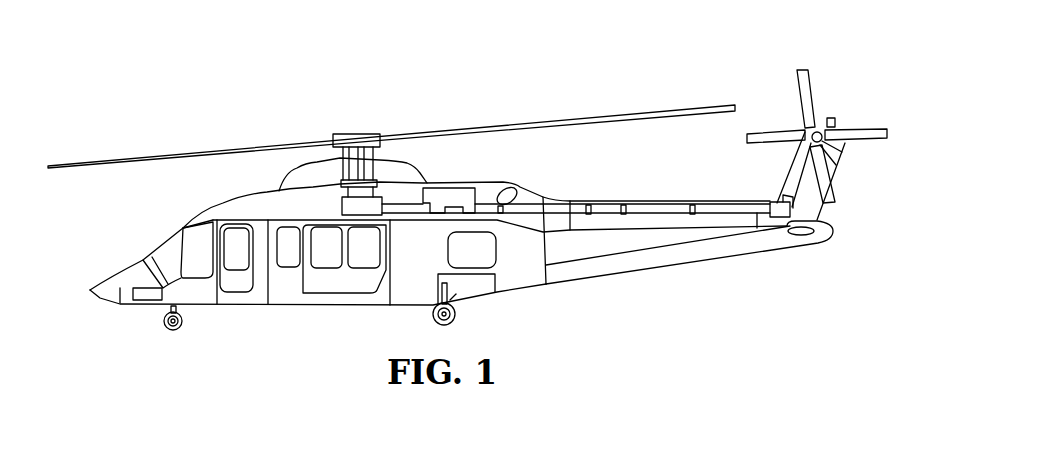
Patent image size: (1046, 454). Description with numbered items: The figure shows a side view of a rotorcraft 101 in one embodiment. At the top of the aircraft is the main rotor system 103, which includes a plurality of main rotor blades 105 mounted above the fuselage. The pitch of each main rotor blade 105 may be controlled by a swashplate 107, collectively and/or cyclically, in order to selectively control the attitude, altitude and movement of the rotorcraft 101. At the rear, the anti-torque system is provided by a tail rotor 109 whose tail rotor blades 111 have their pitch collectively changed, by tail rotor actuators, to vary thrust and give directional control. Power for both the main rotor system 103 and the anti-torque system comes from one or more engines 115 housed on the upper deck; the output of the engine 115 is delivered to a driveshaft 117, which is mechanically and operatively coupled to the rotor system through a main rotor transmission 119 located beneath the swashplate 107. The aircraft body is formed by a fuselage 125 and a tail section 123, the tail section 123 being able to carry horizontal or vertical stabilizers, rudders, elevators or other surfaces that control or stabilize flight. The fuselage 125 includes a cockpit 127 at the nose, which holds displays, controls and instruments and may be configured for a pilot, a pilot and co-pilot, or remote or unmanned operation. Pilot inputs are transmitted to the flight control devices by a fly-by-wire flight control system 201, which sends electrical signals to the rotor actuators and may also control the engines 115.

The rotorcraft 101 is at (245, 78).
The main rotor system 103 is at (392, 112).
The main rotor blades 105 is at (188, 153).
The swashplate 107 is at (341, 184).
The tail rotor 109 is at (843, 98).
The tail rotor blades 111 is at (867, 140).
The engines 115 is at (448, 191).
The driveshaft 117 is at (405, 214).
The main rotor transmission 119 is at (340, 205).
The tail section 123 is at (683, 264).
The fuselage 125 is at (292, 305).
The cockpit 127 is at (155, 252).
The fly-by-wire flight control system 201 is at (120, 304).